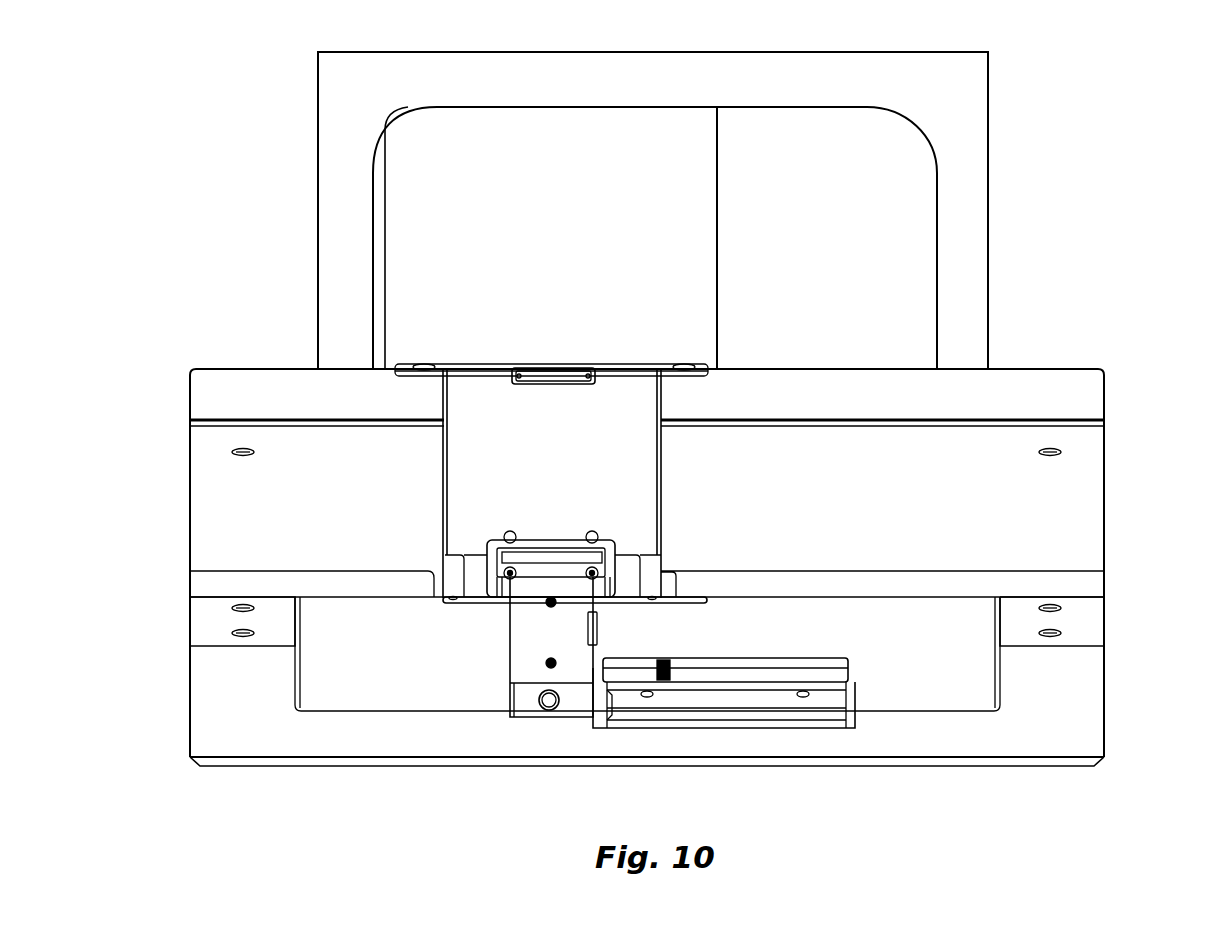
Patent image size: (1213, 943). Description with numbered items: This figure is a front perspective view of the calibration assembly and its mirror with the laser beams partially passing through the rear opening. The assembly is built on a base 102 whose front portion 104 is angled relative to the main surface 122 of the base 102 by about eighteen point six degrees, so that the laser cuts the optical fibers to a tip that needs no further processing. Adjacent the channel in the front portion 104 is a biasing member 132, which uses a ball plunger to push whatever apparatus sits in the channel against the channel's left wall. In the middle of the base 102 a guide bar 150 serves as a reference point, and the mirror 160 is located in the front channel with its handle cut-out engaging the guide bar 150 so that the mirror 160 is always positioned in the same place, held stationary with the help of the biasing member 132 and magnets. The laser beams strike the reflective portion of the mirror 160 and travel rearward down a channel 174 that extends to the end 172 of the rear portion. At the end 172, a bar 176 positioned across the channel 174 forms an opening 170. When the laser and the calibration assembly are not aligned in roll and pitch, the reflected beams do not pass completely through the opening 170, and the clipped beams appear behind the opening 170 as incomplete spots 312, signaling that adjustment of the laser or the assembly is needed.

The base 102 is at (1091, 528).
The front portion 104 is at (1051, 749).
The main surface 122 is at (205, 613).
The biasing member 132 is at (788, 748).
The guide bar 150 is at (690, 596).
The mirror 160 is at (525, 632).
The opening 170 is at (553, 377).
The end 172 is at (263, 368).
The channel 174 is at (650, 464).
The bar 176 is at (628, 368).
The spots 312 is at (585, 313).